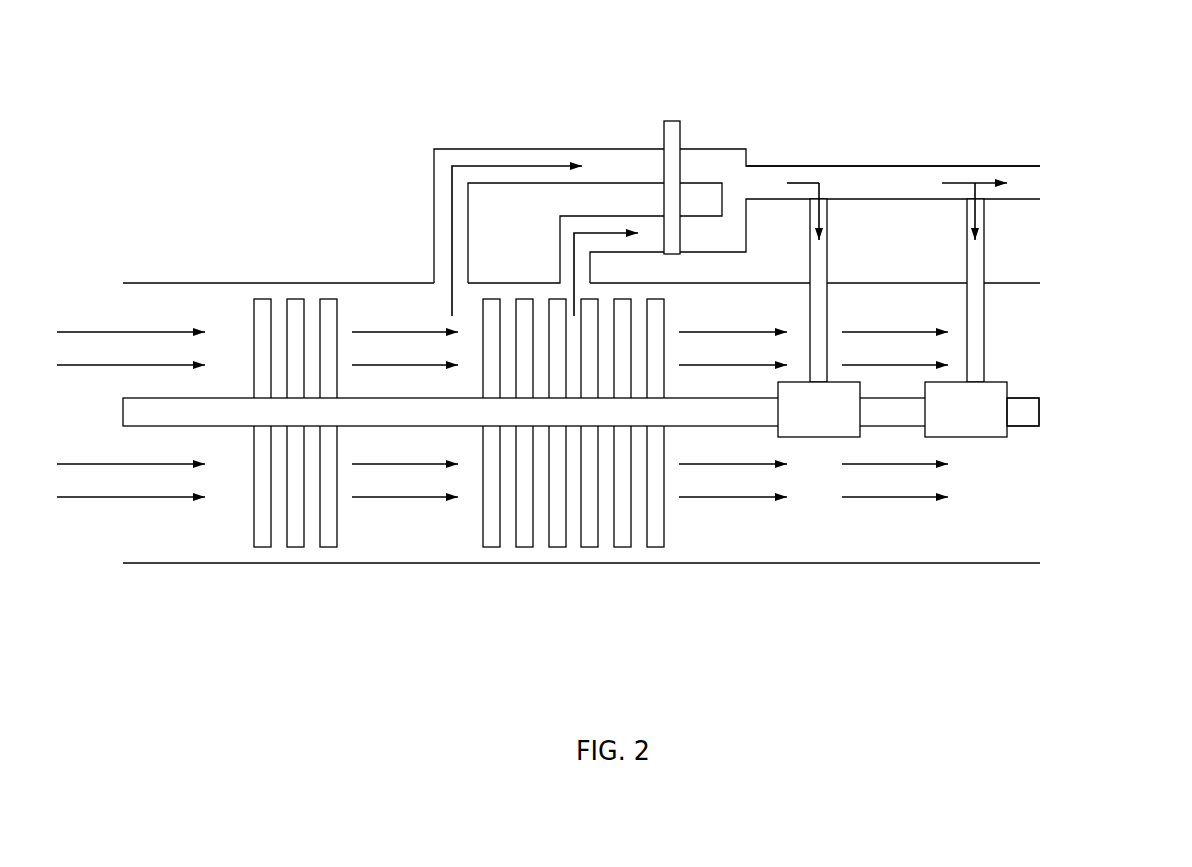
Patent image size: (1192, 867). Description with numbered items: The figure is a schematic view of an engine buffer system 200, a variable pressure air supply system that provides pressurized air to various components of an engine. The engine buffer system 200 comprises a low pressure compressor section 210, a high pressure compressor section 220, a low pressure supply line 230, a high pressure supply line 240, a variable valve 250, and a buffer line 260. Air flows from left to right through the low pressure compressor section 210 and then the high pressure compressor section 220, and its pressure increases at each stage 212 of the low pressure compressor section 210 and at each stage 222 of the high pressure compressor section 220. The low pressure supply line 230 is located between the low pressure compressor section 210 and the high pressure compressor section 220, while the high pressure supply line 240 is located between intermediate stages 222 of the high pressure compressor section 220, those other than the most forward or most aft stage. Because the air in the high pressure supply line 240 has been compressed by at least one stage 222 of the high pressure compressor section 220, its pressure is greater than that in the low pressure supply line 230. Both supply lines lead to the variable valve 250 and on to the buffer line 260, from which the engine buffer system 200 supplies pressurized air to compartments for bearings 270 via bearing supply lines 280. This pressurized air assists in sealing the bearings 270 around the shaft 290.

The engine buffer system 200 is at (312, 124).
The low pressure compressor section 210 is at (274, 423).
The stage 212 is at (262, 298).
The high pressure compressor section 220 is at (572, 500).
The stage 222 is at (491, 549).
The low pressure supply line 230 is at (500, 149).
The high pressure supply line 240 is at (613, 216).
The variable valve 250 is at (672, 121).
The buffer line 260 is at (858, 166).
The bearings 270 is at (817, 437).
The bearing supply lines 280 is at (827, 302).
The shaft 290 is at (1025, 426).